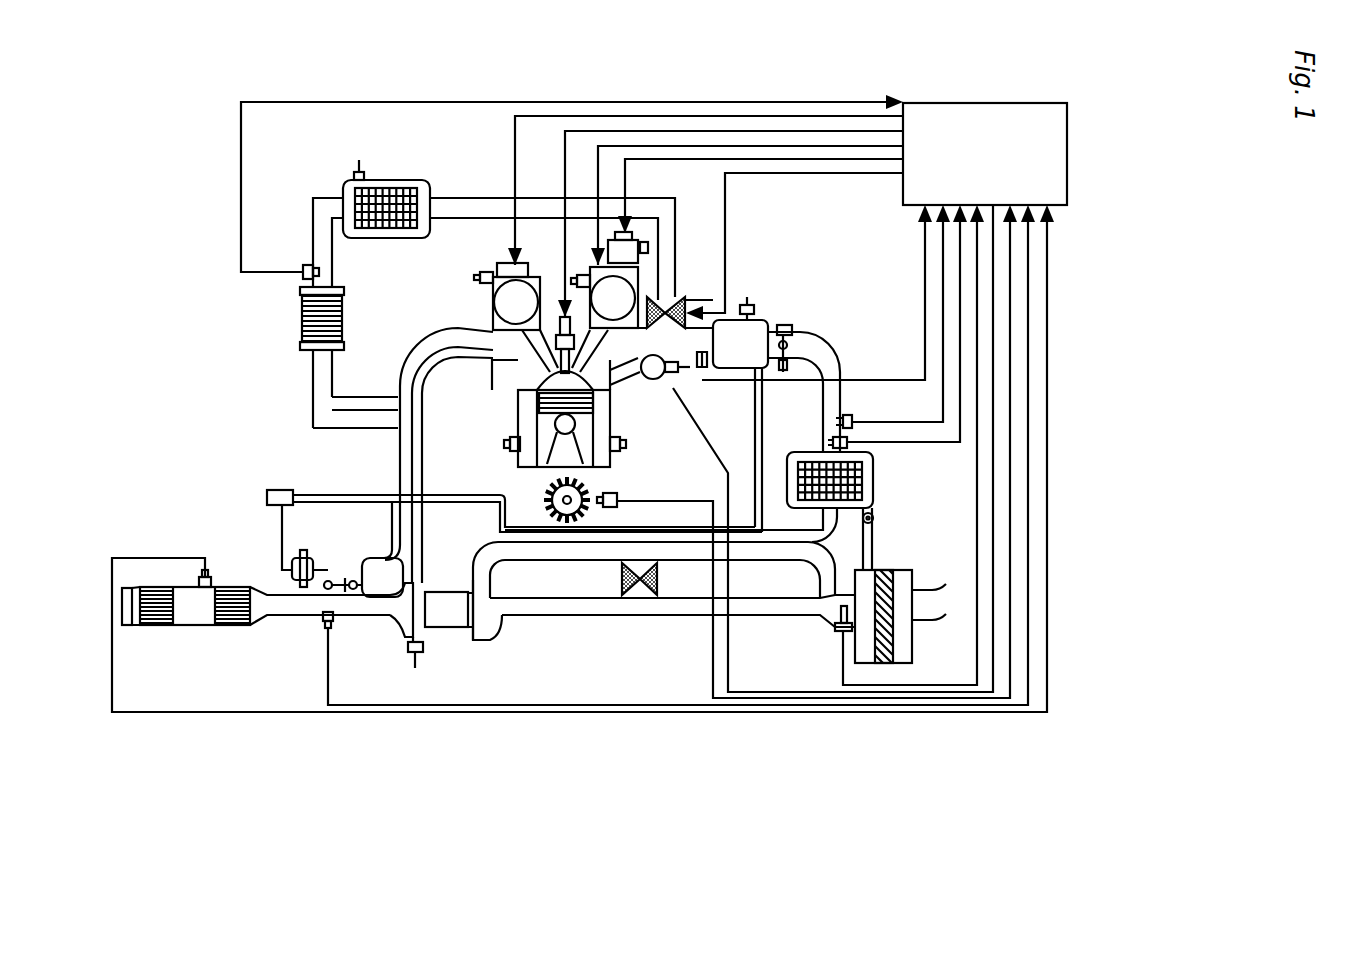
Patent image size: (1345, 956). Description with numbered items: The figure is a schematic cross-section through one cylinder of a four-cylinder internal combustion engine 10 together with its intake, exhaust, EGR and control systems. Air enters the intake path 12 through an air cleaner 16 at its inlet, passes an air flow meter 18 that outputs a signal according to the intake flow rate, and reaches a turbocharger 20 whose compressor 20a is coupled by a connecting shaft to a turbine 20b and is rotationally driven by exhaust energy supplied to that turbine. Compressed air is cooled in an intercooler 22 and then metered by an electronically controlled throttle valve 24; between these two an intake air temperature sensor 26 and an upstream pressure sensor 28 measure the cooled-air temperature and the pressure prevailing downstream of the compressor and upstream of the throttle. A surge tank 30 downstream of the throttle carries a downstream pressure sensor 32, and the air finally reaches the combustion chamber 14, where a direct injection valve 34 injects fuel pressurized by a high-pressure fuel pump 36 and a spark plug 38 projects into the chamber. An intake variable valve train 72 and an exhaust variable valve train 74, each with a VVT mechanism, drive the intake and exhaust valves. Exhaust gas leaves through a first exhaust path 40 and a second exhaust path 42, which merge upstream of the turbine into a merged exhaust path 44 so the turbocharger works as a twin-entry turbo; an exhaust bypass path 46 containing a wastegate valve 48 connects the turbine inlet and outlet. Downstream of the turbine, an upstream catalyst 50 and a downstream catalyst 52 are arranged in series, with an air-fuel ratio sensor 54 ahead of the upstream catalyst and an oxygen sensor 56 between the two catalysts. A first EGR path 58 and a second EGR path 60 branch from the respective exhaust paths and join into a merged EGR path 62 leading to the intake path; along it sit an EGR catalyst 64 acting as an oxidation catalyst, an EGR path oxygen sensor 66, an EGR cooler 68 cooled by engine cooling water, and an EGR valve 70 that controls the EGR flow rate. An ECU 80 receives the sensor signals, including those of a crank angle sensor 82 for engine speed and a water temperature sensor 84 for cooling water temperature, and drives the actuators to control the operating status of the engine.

The internal combustion engine 10 is at (491, 416).
The intake path 12 is at (580, 618).
The combustion chamber 14 is at (492, 372).
The air cleaner 16 is at (887, 568).
The air flow meter 18 is at (830, 638).
The turbocharger 20 is at (458, 648).
The compressor 20a is at (495, 625).
The turbine 20b is at (408, 650).
The intercooler 22 is at (873, 488).
The throttle valve 24 is at (793, 343).
The intake air temperature sensor 26 is at (850, 450).
The upstream pressure sensor 28 is at (858, 414).
The surge tank 30 is at (748, 300).
The downstream pressure sensor 32 is at (664, 382).
The direct injection valve 34 is at (633, 385).
The high-pressure fuel pump 36 is at (628, 245).
The spark plug 38 is at (558, 318).
The first exhaust path 40 is at (422, 473).
The second exhaust path 42 is at (400, 454).
The merged exhaust path 44 is at (292, 617).
The exhaust bypass path 46 is at (378, 558).
The wastegate valve 48 is at (331, 574).
The upstream catalyst 50 is at (236, 627).
The downstream catalyst 52 is at (168, 627).
The air-fuel ratio sensor 54 is at (335, 622).
The oxygen sensor 56 is at (210, 575).
The first EGR path 58 is at (350, 420).
The second EGR path 60 is at (364, 400).
The merged EGR path 62 is at (314, 376).
The EGR catalyst 64 is at (302, 300).
The EGR path oxygen sensor 66 is at (304, 268).
The EGR cooler 68 is at (408, 180).
The EGR valve 70 is at (668, 298).
The intake variable valve train 72 is at (625, 298).
The exhaust variable valve train 74 is at (504, 298).
The ECU 80 is at (1067, 150).
The crank angle sensor 82 is at (625, 493).
The water temperature sensor 84 is at (504, 444).